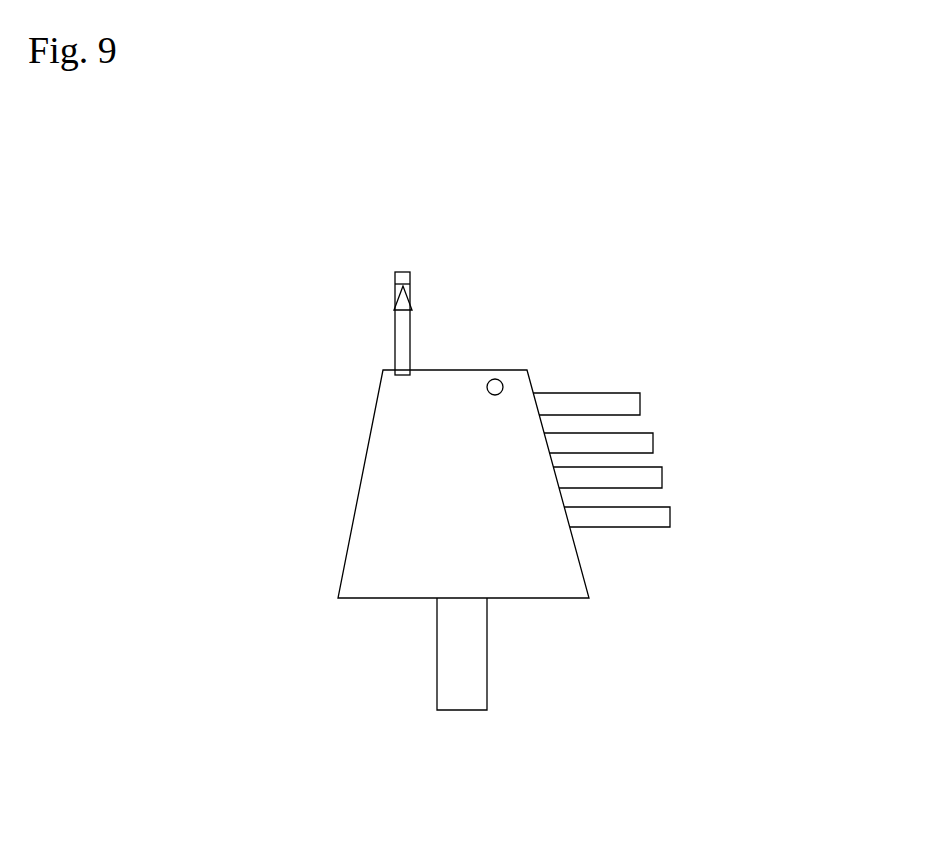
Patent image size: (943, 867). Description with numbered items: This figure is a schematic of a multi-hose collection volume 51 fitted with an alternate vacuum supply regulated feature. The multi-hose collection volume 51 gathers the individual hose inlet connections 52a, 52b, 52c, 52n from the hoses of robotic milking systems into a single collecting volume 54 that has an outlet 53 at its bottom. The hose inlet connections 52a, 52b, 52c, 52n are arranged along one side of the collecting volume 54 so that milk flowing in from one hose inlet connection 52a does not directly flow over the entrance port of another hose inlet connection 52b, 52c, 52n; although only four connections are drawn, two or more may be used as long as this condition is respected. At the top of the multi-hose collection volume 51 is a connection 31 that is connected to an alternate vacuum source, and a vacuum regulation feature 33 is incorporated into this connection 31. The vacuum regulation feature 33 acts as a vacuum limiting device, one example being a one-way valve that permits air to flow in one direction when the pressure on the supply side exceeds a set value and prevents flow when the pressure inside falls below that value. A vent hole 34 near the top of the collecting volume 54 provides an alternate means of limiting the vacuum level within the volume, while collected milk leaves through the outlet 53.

The multi-hose collection volume 51 is at (327, 435).
The collecting volume 54 is at (388, 520).
The connection 31 is at (403, 335).
The vacuum regulation feature 33 is at (410, 298).
The vent hole 34 is at (500, 380).
The hose inlet connection 52a is at (640, 398).
The hose inlet connection 52b is at (653, 437).
The hose inlet connection 52c is at (662, 483).
The hose inlet connection 52n is at (670, 513).
The outlet 53 is at (463, 667).